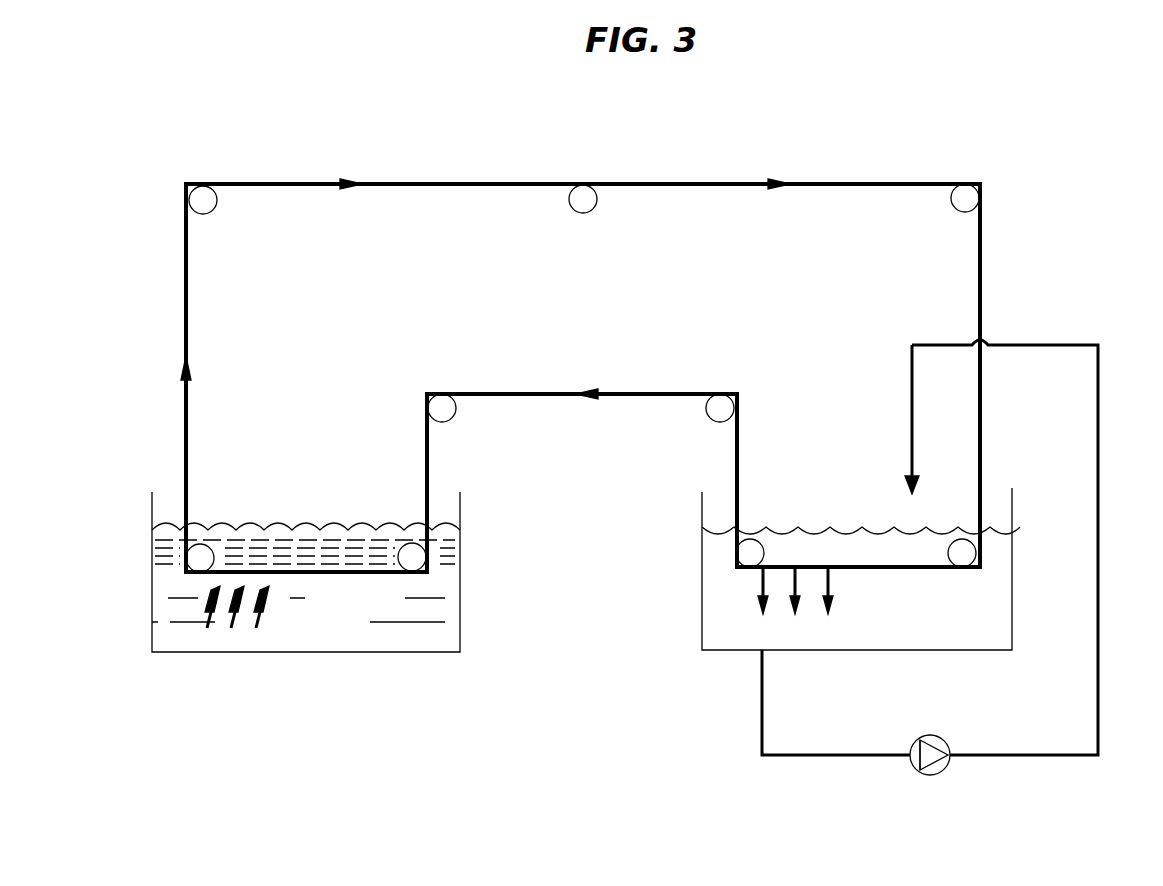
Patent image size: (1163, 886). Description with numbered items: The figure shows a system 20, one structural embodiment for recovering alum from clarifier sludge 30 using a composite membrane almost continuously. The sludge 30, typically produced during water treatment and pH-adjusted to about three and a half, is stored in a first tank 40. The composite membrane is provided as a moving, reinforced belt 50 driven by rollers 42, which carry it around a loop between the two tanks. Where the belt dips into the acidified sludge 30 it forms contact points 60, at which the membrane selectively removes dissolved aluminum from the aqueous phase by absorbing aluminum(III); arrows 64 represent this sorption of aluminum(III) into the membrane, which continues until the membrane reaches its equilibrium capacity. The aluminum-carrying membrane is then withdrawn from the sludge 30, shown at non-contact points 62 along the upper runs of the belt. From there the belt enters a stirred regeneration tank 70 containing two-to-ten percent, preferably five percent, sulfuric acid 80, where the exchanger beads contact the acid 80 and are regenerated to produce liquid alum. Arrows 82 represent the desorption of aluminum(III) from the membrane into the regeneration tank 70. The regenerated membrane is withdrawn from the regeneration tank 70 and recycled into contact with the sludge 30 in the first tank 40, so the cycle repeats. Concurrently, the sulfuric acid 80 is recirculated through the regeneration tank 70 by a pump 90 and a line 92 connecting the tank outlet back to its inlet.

The system 20 is at (800, 118).
The clarifier sludge 30 is at (327, 637).
The first tank 40 is at (152, 520).
The rollers 42 is at (203, 200).
The reinforced belt 50 is at (585, 394).
The contact points 60 is at (427, 538).
The non-contact points 62 is at (186, 275).
The arrows 64 is at (262, 628).
The regeneration tank 70 is at (1012, 505).
The sulfuric acid 80 is at (988, 614).
The arrows 82 is at (766, 590).
The pump 90 is at (930, 774).
The line 92 is at (1022, 755).